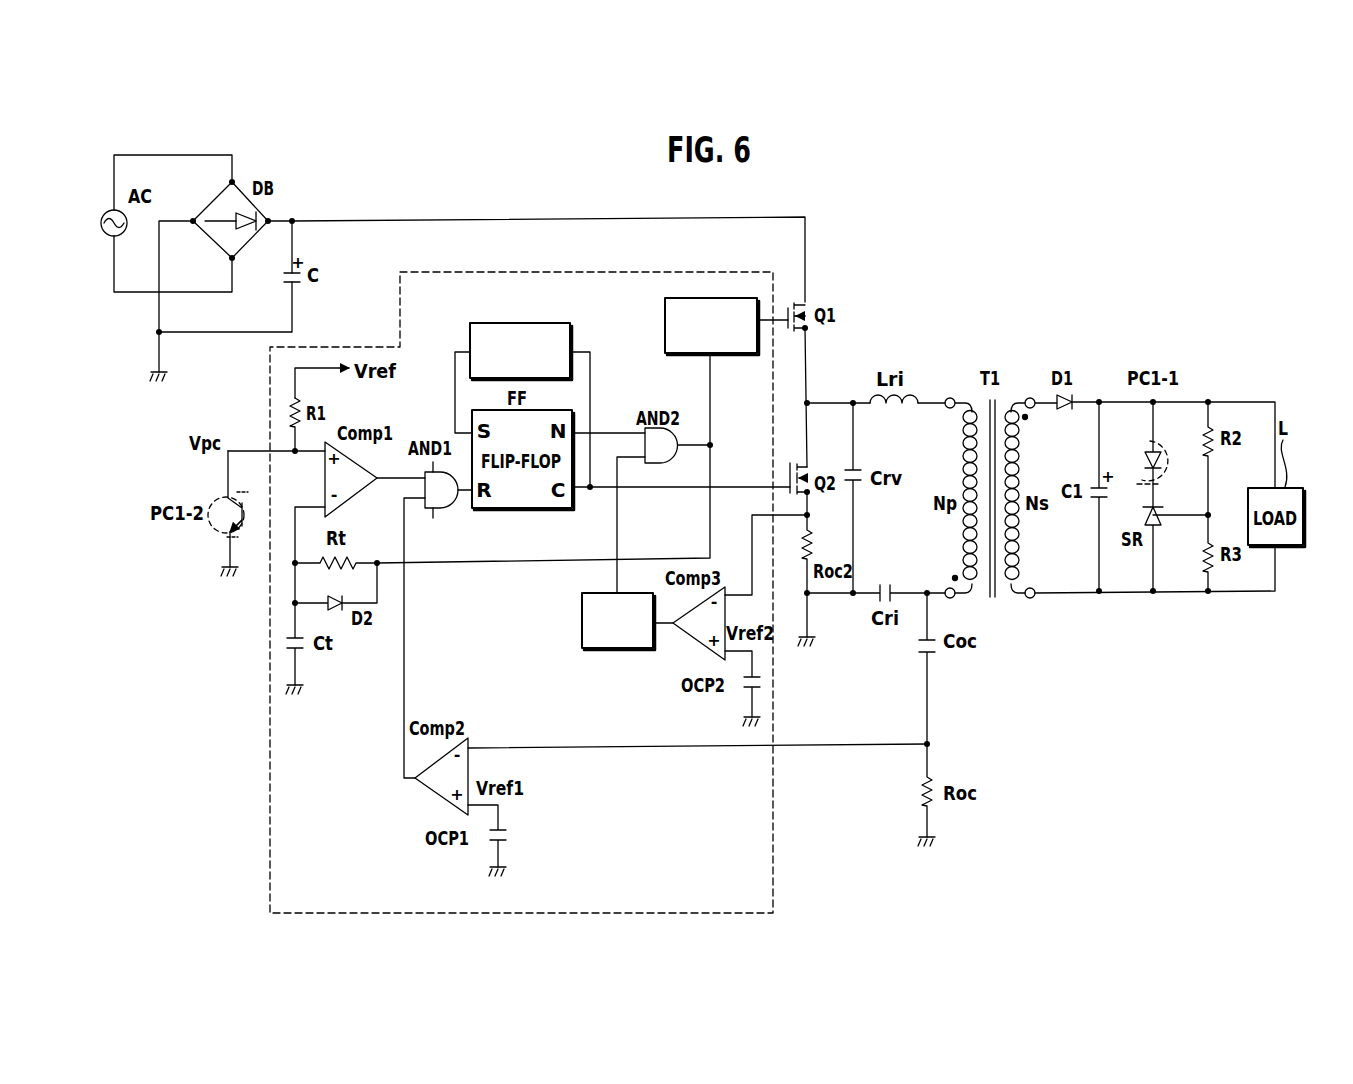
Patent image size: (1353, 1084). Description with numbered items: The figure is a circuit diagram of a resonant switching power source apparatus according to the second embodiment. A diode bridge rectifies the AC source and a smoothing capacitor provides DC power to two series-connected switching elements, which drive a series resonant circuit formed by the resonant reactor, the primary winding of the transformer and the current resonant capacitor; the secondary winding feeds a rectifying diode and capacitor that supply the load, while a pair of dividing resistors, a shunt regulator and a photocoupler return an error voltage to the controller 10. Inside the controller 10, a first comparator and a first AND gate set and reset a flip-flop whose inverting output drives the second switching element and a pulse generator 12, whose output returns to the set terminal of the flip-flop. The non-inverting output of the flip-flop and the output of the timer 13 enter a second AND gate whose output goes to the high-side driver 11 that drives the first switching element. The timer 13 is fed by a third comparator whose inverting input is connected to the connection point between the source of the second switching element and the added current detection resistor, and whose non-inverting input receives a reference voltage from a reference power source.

The controller 10 is at (421, 271).
The high-side driver 11 is at (663, 331).
The pulse generator 12 is at (541, 323).
The timer 13 is at (582, 625).